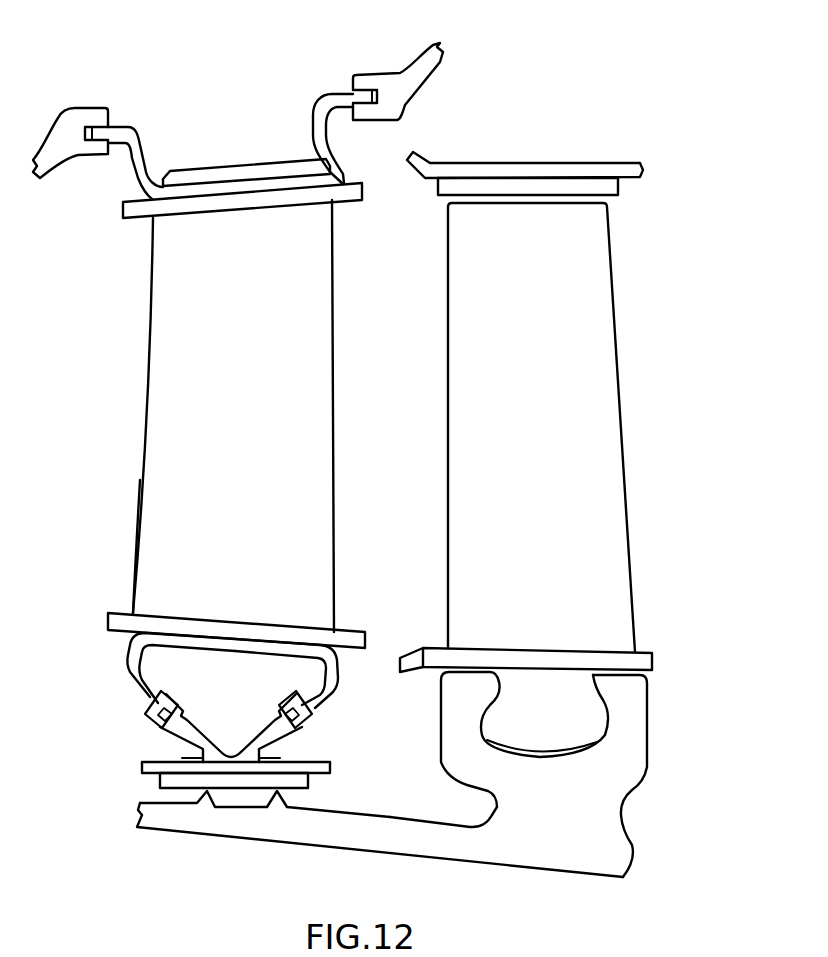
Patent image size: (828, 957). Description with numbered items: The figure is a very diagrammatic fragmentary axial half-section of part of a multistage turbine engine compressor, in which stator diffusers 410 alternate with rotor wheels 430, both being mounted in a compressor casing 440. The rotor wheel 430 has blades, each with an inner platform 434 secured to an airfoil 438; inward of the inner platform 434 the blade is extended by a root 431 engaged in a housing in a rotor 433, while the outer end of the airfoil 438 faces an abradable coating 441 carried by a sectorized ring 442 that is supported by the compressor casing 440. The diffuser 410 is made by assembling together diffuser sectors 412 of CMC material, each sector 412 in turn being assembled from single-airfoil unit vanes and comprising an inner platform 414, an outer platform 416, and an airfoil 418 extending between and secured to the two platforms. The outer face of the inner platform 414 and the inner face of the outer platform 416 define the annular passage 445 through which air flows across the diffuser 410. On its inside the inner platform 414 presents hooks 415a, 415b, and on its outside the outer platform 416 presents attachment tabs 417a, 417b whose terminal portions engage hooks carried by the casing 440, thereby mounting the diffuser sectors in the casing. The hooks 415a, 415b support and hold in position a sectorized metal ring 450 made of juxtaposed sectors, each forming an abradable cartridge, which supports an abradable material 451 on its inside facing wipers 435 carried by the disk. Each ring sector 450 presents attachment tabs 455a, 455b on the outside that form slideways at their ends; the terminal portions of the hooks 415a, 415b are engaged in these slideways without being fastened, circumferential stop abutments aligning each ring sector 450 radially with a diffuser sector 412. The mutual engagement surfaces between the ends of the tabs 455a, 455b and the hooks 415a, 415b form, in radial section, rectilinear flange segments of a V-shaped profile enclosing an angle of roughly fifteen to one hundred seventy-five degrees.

The stator diffuser 410 is at (238, 398).
The diffuser sector 412 is at (131, 551).
The inner platform 414 is at (240, 616).
The hook 415a is at (137, 680).
The hook 415b is at (330, 694).
The outer platform 416 is at (260, 198).
The attachment tab 417a is at (138, 155).
The attachment tab 417b is at (312, 118).
The airfoil 418 is at (264, 388).
The rotor wheel 430 is at (414, 501).
The root 431 is at (577, 723).
The rotor 433 is at (628, 700).
The inner platform 434 is at (537, 650).
The wiper 435 is at (277, 794).
The airfoil 438 is at (551, 381).
The compressor casing 440 is at (397, 55).
The abradable coating 441 is at (522, 190).
The sectorized ring 442 is at (528, 163).
The annular passage 445 is at (404, 498).
The sectorized metal ring 450 is at (230, 733).
The abradable material 451 is at (165, 777).
The attachment tab 455a is at (196, 738).
The attachment tab 455b is at (267, 740).